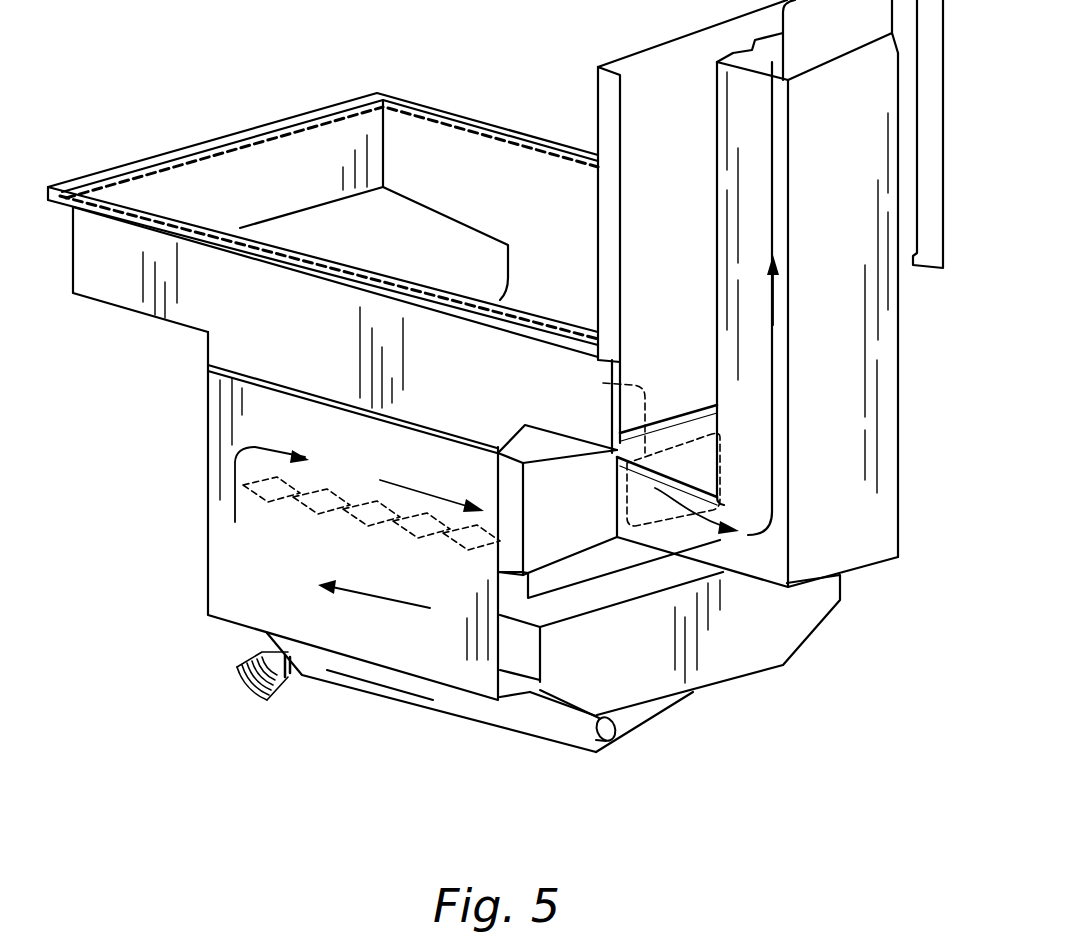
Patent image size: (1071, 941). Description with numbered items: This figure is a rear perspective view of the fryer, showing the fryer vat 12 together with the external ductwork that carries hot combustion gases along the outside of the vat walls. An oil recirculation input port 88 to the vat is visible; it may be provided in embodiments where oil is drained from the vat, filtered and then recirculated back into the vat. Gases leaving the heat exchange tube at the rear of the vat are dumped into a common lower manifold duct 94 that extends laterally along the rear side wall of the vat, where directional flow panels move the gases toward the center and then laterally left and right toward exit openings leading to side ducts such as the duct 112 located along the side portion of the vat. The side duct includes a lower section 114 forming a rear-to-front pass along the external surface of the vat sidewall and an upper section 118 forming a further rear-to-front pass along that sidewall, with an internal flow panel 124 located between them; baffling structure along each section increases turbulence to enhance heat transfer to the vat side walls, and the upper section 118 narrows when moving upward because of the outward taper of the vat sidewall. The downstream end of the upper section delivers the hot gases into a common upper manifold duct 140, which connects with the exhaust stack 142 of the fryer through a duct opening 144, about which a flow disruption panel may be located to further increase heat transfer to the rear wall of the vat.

The fryer vat 12 is at (523, 250).
The oil recirculation input port 88 is at (612, 735).
The lower manifold duct 94 is at (715, 648).
The duct 112 is at (240, 577).
The lower section 114 is at (383, 630).
The upper section 118 is at (272, 420).
The internal flow panel 124 is at (364, 512).
The upper manifold duct 140 is at (553, 502).
The exhaust stack 142 is at (850, 497).
The duct opening 144 is at (639, 449).